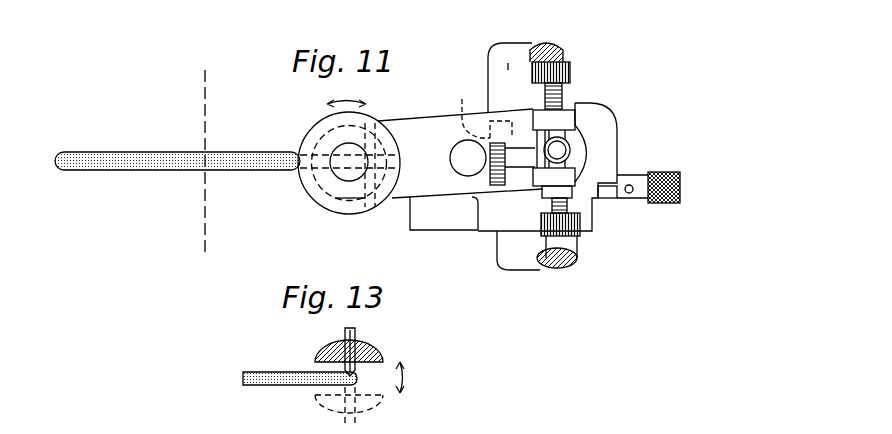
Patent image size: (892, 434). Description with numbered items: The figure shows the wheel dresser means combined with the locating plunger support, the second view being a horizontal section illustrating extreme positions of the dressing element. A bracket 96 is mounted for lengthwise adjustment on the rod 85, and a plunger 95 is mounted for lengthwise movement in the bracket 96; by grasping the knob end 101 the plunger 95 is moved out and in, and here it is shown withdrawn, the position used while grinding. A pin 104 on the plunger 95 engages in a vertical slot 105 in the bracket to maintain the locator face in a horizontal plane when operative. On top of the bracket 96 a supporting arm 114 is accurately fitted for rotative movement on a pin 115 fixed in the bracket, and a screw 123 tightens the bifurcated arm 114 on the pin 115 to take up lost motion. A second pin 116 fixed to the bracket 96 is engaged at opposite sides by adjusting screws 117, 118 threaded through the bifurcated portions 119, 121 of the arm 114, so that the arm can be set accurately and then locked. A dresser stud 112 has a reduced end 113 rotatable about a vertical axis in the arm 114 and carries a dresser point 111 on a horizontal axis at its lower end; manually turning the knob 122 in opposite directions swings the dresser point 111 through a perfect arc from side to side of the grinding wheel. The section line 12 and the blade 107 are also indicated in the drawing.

In FIG. 11, the section line 12 is at (50, 160).
In FIG. 11, the blade 107 is at (172, 173).
In FIG. 13, the blade 107 is at (270, 386).
In FIG. 11, the knob 122 is at (316, 125).
In FIG. 11, the reduced end 113 is at (342, 178).
In FIG. 11, the dresser stud 112 is at (341, 212).
In FIG. 13, the dresser stud 112 is at (332, 350).
In FIG. 11, the dresser point 111 is at (372, 210).
In FIG. 13, the dresser point 111 is at (357, 348).
In FIG. 11, the supporting arm 114 is at (413, 132).
In FIG. 11, the screw 123 is at (463, 99).
In FIG. 11, the pin 115 is at (460, 153).
In FIG. 11, the adjusting screw 117 is at (568, 70).
In FIG. 11, the bifurcated portion 119 is at (573, 115).
In FIG. 11, the pin 116 is at (565, 147).
In FIG. 11, the bifurcated portion 121 is at (575, 178).
In FIG. 11, the plunger 95 is at (643, 177).
In FIG. 11, the pin 104 is at (630, 193).
In FIG. 11, the knob end 101 is at (681, 192).
In FIG. 11, the vertical slot 105 is at (606, 198).
In FIG. 11, the bracket 96 is at (500, 220).
In FIG. 11, the rod 85 is at (522, 258).
In FIG. 11, the adjusting screw 118 is at (578, 238).